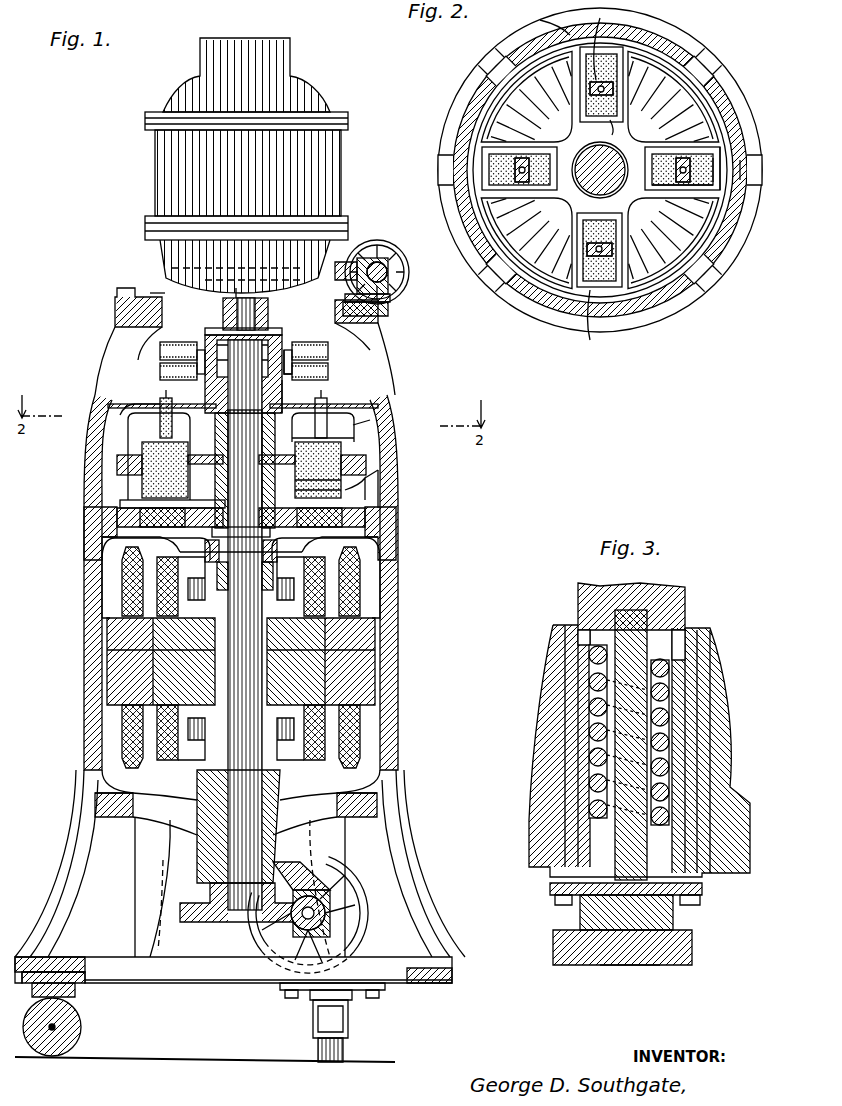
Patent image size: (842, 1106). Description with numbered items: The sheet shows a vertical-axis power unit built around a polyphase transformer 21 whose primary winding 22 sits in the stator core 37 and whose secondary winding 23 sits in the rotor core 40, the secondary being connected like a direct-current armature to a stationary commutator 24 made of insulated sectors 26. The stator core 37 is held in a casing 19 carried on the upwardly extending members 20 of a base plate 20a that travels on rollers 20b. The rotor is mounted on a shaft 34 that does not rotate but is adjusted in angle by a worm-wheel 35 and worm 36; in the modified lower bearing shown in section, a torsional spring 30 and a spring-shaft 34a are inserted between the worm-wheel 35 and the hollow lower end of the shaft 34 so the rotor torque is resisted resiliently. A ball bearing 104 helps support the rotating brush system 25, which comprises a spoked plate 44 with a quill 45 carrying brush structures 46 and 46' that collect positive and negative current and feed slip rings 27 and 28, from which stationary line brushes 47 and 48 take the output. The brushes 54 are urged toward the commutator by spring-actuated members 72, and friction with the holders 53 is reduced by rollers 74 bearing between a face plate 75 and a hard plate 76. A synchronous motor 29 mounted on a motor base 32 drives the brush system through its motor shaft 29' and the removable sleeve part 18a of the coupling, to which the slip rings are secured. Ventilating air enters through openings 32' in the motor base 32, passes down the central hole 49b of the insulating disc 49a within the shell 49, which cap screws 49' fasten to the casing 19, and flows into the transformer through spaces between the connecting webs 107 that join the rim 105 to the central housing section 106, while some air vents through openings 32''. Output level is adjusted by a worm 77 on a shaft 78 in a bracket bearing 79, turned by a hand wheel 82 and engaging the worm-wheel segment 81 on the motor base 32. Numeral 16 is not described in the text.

In FIG. 1, the shaft boss 16 is at (223, 318).
In FIG. 1, the removable sleeve part 18a is at (270, 395).
In FIG. 1, the casing 19 is at (84, 592).
In FIG. 1, the upwardly extending members 20 is at (133, 843).
In FIG. 1, the base plate 20a is at (222, 985).
In FIG. 1, the rollers 20b is at (84, 1024).
In FIG. 1, the polyphase transformer 21 is at (370, 588).
In FIG. 1, the primary winding 22 is at (340, 782).
In FIG. 1, the secondary winding 23 is at (360, 565).
In FIG. 1, the stationary commutator 24 is at (370, 490).
In FIG. 1, the rotating brush system 25 is at (364, 424).
In FIG. 1, the sectors 26 is at (345, 485).
In FIG. 2, the sectors 26 is at (520, 100).
In FIG. 1, the slip ring 27 is at (292, 378).
In FIG. 1, the slip ring 28 is at (285, 348).
In FIG. 1, the synchronous motor 29 is at (224, 165).
In FIG. 1, the motor shaft 29' is at (210, 297).
In FIG. 3, the torsional spring 30 is at (670, 668).
In FIG. 1, the motor base 32 is at (245, 341).
In FIG. 1, the openings 32' is at (126, 278).
In FIG. 1, the openings 32'' is at (275, 488).
In FIG. 1, the shaft 34 is at (225, 650).
In FIG. 2, the shaft 34 is at (580, 190).
In FIG. 3, the shaft 34 is at (686, 598).
In FIG. 3, the spring-shaft 34a is at (640, 966).
In FIG. 1, the worm-wheel 35 is at (212, 924).
In FIG. 3, the worm-wheel 35 is at (693, 952).
In FIG. 1, the worm 36 is at (328, 918).
In FIG. 1, the stator core 37 is at (350, 652).
In FIG. 1, the rotor core 40 is at (360, 670).
In FIG. 1, the spoked plate 44 is at (345, 462).
In FIG. 2, the spoked plate 44 is at (640, 338).
In FIG. 1, the quill 45 is at (340, 445).
In FIG. 1, the brush structures 46 is at (276, 455).
In FIG. 2, the brush structures 46 is at (632, 143).
In FIG. 2, the brush structures 46' is at (614, 118).
In FIG. 1, the line brush 47 is at (165, 371).
In FIG. 1, the line brush 48 is at (160, 348).
In FIG. 1, the shell 49 is at (177, 359).
In FIG. 1, the circular disc 49a is at (407, 404).
In FIG. 1, the central hole 49b is at (196, 416).
In FIG. 1, the cap screws 49' is at (418, 494).
In FIG. 1, the brush holders 53 is at (241, 476).
In FIG. 2, the brush holders 53 is at (700, 188).
In FIG. 1, the brushes 54 is at (130, 448).
In FIG. 2, the brushes 54 is at (730, 190).
In FIG. 1, the spring-actuated members 72 is at (128, 416).
In FIG. 2, the spring-actuated members 72 is at (520, 160).
In FIG. 1, the rollers 74 is at (117, 465).
In FIG. 2, the rollers 74 is at (718, 165).
In FIG. 2, the face plate 75 is at (715, 185).
In FIG. 1, the plate 76 is at (120, 504).
In FIG. 1, the worm 77 is at (398, 260).
In FIG. 1, the shaft 78 is at (392, 290).
In FIG. 1, the bracket bearing 79 is at (385, 303).
In FIG. 1, the worm wheel segment 81 is at (360, 258).
In FIG. 1, the hand wheel 82 is at (378, 245).
In FIG. 1, the ball bearing 104 is at (395, 542).
In FIG. 1, the rim 105 is at (105, 548).
In FIG. 1, the central section 106 is at (80, 530).
In FIG. 1, the connecting webs 107 is at (110, 525).